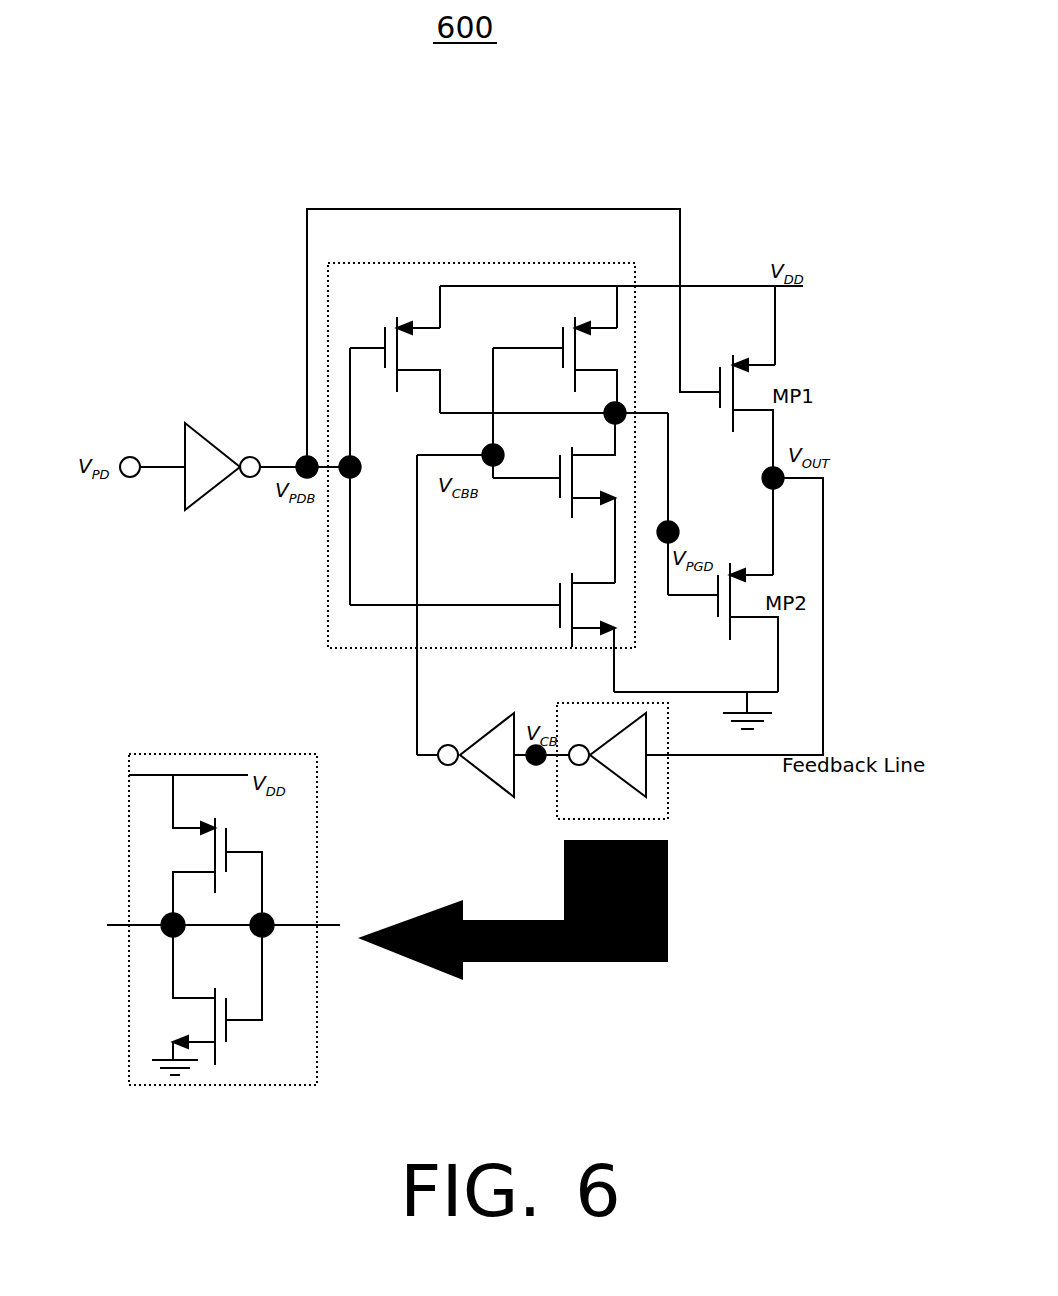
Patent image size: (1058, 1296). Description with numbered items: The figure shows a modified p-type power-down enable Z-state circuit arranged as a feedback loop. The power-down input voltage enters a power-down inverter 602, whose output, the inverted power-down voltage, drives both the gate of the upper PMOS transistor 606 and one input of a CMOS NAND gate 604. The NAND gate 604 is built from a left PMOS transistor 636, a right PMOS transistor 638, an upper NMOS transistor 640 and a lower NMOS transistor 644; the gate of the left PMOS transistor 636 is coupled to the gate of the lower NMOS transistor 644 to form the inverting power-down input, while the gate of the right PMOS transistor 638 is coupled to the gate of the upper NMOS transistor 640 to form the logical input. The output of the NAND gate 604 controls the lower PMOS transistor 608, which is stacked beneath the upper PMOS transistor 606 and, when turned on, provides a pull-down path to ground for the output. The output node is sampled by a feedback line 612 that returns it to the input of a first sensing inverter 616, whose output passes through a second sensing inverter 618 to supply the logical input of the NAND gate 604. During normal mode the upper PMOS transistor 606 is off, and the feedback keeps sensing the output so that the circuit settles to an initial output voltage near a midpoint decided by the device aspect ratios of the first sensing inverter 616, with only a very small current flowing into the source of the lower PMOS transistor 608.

The power-down inverter 602 is at (205, 422).
The CMOS NAND gate 604 is at (437, 262).
The upper PMOS transistor 606 is at (777, 364).
The lower PMOS transistor 608 is at (778, 575).
The feedback line 612 is at (773, 762).
The first sensing inverter 616 is at (588, 805).
The second sensing inverter 618 is at (468, 782).
The left PMOS transistor 636 is at (442, 370).
The right PMOS transistor 638 is at (593, 317).
The upper NMOS transistor 640 is at (580, 455).
The lower NMOS transistor 644 is at (582, 582).